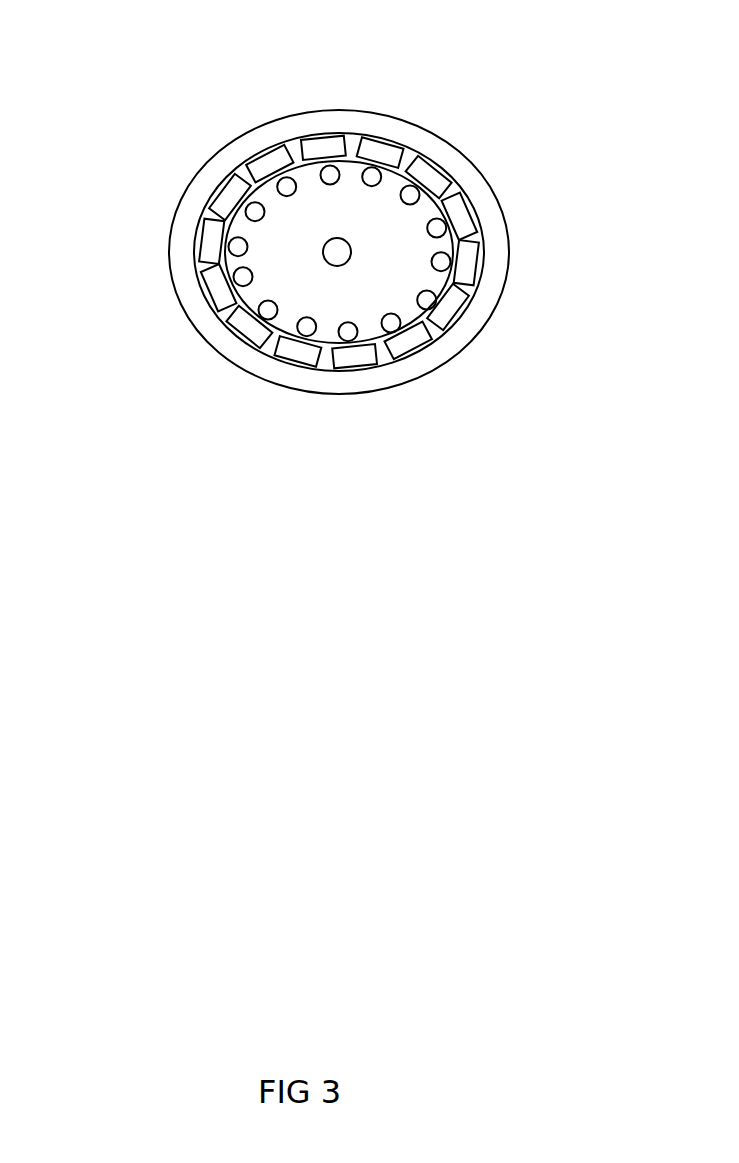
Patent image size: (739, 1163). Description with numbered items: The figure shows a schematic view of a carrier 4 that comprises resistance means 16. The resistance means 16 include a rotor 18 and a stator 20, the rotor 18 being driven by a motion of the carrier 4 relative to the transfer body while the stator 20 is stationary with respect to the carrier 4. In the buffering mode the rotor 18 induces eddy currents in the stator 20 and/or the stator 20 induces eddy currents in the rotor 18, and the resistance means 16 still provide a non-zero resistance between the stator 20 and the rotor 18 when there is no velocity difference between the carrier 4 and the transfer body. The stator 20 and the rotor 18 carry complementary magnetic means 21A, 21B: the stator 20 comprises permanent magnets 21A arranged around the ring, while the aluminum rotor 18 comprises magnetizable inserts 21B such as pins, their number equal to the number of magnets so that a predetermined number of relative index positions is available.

The carrier 4 is at (449, 374).
The resistance means 16 is at (186, 253).
The rotor 18 is at (454, 222).
The stator 20 is at (439, 159).
The permanent magnets 21A is at (390, 134).
The complementary magnetic means 21B is at (330, 150).